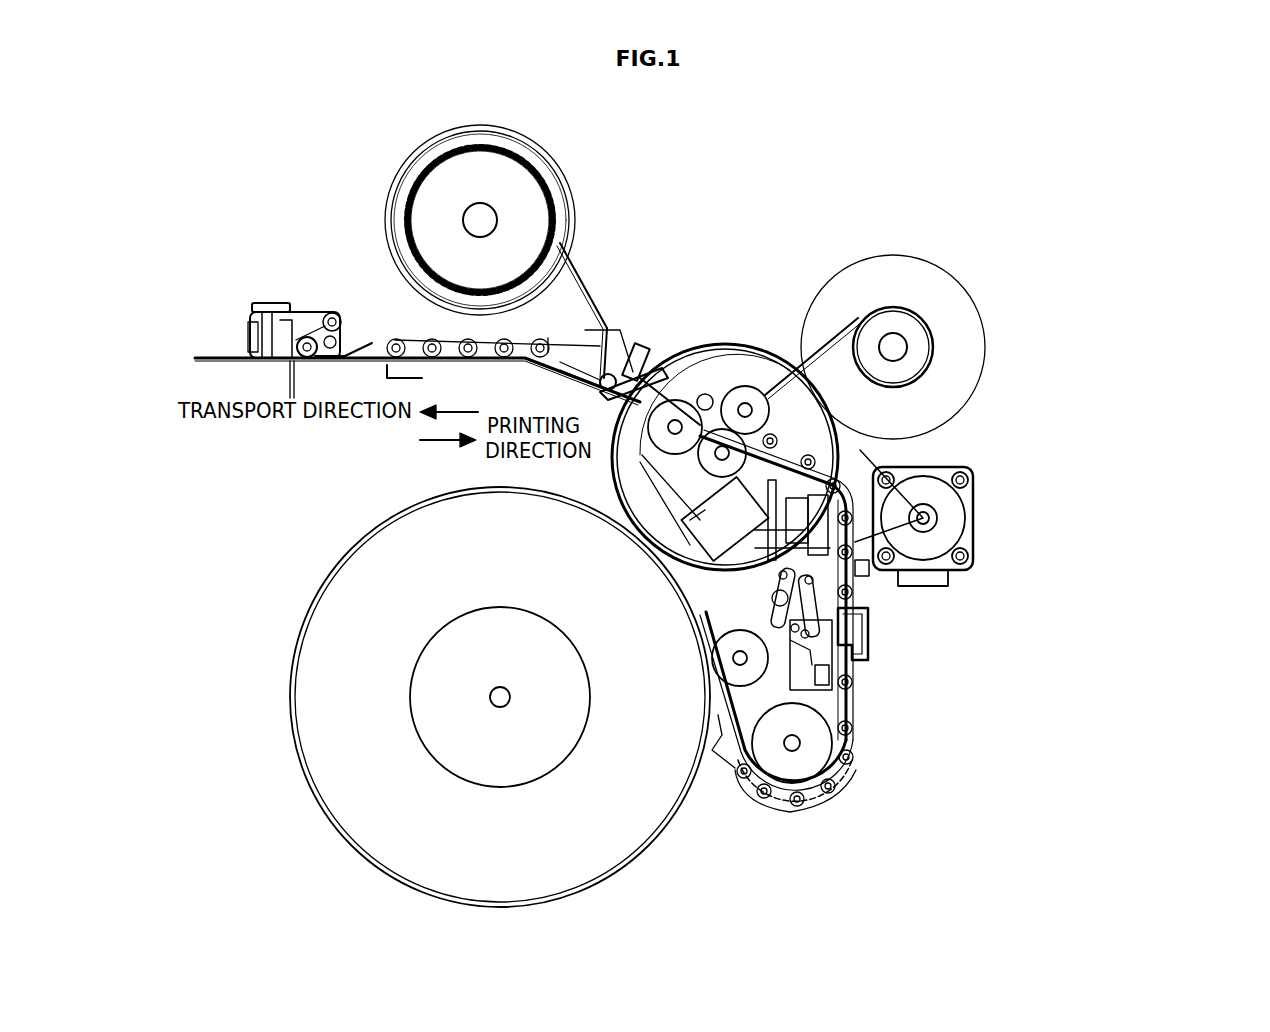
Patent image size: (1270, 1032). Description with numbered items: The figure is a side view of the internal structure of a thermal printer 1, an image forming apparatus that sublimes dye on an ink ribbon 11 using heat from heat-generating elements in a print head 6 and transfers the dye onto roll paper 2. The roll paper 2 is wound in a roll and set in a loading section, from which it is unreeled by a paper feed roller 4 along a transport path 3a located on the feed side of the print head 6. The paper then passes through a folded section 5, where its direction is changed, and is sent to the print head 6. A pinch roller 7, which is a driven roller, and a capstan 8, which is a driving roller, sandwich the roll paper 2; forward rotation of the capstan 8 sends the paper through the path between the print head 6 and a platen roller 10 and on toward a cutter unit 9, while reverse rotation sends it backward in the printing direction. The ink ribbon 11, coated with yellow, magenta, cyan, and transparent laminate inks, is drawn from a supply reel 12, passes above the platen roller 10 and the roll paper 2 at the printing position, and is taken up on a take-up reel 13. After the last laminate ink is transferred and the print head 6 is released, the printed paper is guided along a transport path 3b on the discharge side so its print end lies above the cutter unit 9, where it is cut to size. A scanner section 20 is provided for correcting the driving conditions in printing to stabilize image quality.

The thermal printer 1 is at (950, 243).
The roll paper 2 is at (312, 676).
The transport path 3a is at (872, 676).
The transport path 3b is at (397, 305).
The paper feed roller 4 is at (838, 710).
The folded section 5 is at (850, 797).
The print head 6 is at (668, 352).
The pinch roller 7 is at (770, 412).
The capstan 8 is at (705, 465).
The cutter unit 9 is at (270, 305).
The platen roller 10 is at (660, 440).
The ink ribbon 11 is at (583, 246).
The supply reel 12 is at (540, 164).
The take-up reel 13 is at (985, 318).
The scanner section 20 is at (882, 612).